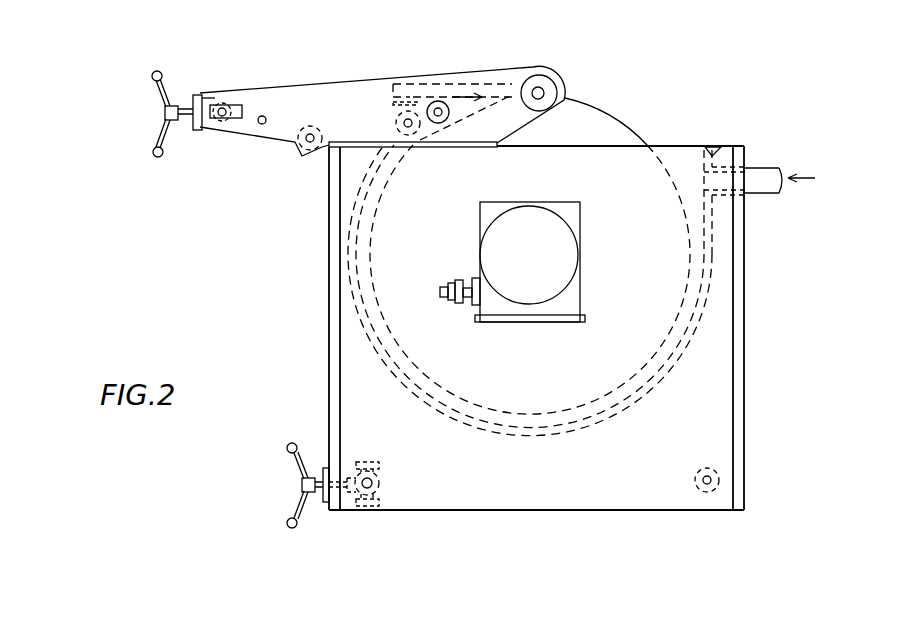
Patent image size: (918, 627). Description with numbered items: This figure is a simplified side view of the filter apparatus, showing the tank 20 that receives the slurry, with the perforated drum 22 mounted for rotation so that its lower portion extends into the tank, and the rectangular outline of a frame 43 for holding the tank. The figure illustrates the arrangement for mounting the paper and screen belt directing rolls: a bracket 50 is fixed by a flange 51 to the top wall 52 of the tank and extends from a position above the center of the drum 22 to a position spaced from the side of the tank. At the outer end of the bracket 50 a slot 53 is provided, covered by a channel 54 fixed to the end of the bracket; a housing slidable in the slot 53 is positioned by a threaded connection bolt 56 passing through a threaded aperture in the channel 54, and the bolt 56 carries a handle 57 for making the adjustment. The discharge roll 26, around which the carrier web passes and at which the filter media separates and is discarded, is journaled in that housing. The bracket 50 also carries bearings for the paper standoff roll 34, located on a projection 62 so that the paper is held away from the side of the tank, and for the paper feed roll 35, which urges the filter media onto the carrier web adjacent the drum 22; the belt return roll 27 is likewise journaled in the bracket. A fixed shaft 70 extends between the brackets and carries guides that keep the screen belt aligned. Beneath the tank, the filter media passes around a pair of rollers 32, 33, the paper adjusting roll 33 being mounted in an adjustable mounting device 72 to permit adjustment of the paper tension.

The tank 20 is at (715, 147).
The drum 22 is at (608, 110).
The roller 26 is at (232, 108).
The roller 27 is at (447, 117).
The roller 32 is at (705, 490).
The roller 33 is at (373, 490).
The roller 34 is at (303, 155).
The roller 35 is at (408, 125).
The frame 43 is at (748, 297).
The brackets 50 is at (362, 92).
The flanges 51 is at (340, 230).
The top wall 52 is at (675, 145).
The slot 53 is at (203, 103).
The channel 54 is at (198, 130).
The threaded connection bolts 56 is at (183, 120).
The handles 57 is at (160, 93).
The projections 62 is at (350, 147).
The fixed shaft 70 is at (262, 124).
The adjustable mounting device 72 is at (367, 508).